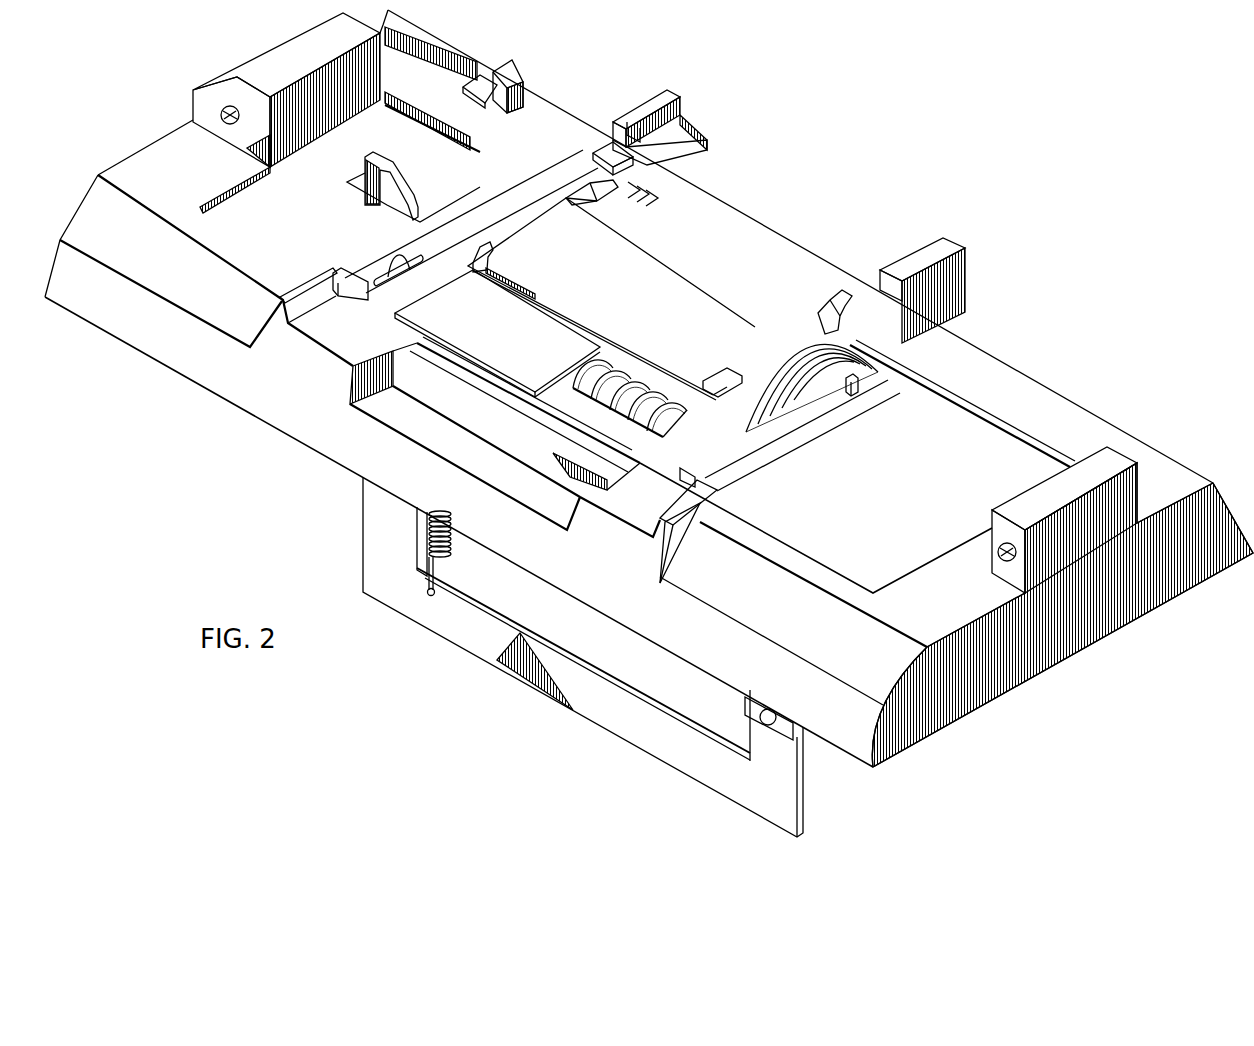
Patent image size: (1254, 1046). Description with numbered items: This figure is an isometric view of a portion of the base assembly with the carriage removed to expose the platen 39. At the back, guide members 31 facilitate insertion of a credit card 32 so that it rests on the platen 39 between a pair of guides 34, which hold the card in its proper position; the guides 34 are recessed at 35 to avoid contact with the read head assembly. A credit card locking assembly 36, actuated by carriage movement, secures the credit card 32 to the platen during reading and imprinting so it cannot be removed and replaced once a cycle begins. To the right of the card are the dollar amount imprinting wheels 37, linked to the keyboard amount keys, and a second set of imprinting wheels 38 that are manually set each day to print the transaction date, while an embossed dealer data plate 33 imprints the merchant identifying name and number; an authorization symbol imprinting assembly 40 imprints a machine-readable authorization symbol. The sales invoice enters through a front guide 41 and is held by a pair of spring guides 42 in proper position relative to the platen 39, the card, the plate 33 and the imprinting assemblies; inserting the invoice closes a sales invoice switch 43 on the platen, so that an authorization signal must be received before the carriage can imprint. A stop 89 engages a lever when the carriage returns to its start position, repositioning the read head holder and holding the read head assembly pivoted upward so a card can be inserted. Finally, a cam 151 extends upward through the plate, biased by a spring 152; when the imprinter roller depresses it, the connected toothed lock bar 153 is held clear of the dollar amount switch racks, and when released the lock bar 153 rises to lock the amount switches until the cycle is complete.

The guide members 31 is at (680, 110).
The credit card 32 is at (673, 330).
The embossed dealer data plate 33 is at (551, 374).
The guides 34 is at (593, 182).
The recess 35 is at (585, 201).
The credit card locking assembly 36 is at (599, 138).
The imprinting wheels 37 is at (803, 405).
The imprinting wheels 38 is at (652, 442).
The platen 39 is at (563, 407).
The authorization symbol imprinting assembly 40 is at (855, 396).
The front guide 41 is at (649, 388).
The spring guides 42 is at (430, 243).
The sales invoice switch 43 is at (388, 256).
The stop 89 is at (513, 77).
The cam 151 is at (397, 187).
The spring 152 is at (450, 558).
The toothed lock bar 153 is at (473, 642).